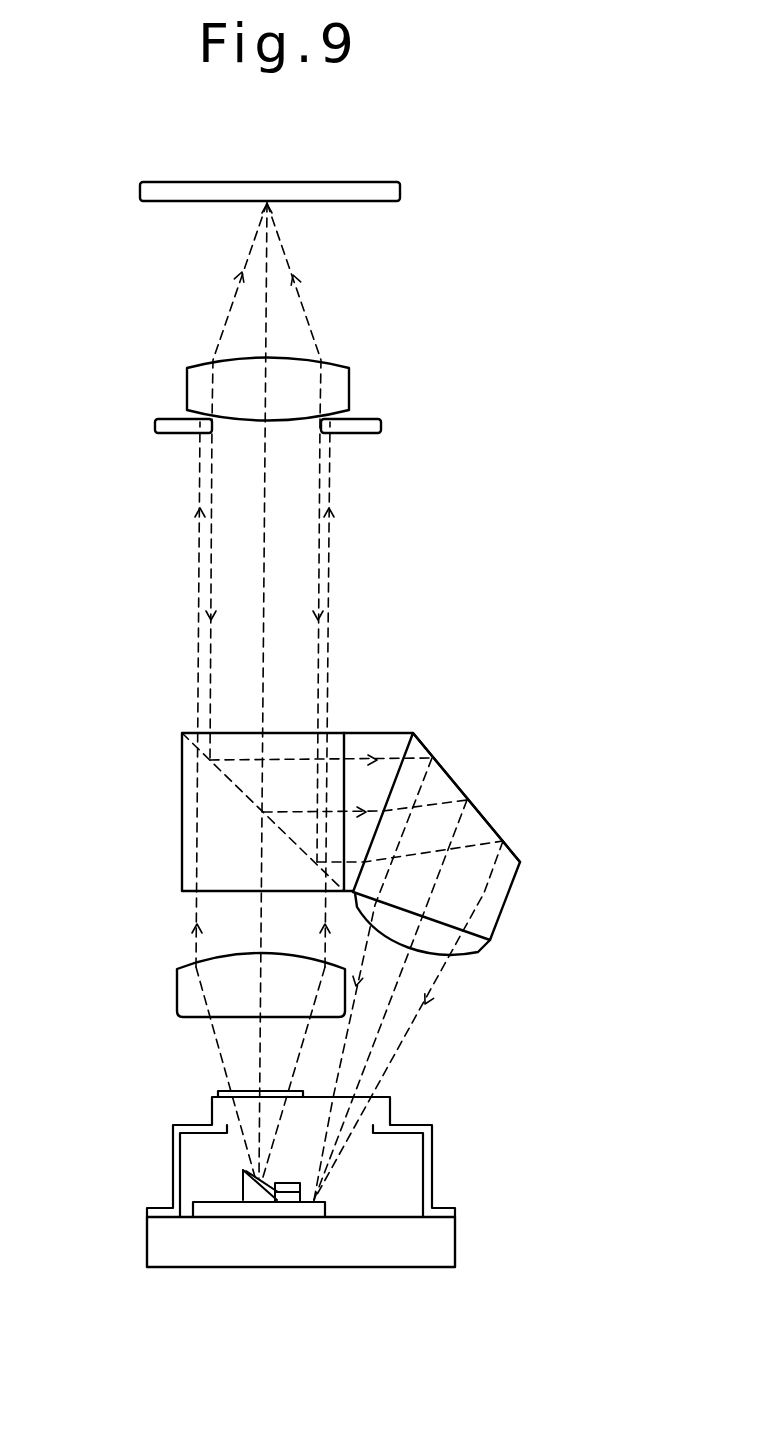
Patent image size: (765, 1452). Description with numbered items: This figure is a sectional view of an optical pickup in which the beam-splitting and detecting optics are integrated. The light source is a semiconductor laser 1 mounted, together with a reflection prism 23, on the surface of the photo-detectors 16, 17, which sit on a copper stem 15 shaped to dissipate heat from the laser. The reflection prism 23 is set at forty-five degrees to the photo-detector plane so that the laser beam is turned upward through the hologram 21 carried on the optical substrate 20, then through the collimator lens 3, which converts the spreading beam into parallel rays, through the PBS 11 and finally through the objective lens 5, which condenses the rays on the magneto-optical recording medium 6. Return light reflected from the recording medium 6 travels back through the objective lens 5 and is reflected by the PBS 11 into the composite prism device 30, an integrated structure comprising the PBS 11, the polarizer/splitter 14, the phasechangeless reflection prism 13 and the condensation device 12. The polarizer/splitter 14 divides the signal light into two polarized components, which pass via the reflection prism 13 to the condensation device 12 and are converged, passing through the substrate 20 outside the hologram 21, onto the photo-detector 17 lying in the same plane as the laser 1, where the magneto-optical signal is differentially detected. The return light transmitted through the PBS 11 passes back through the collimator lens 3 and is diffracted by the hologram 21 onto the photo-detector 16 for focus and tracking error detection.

The semiconductor laser 1 is at (284, 1203).
The collimator lens 3 is at (178, 968).
The objective lens 5 is at (188, 378).
The magneto-optical recording medium 6 is at (141, 188).
The PBS 11 is at (182, 823).
The condensation device 12 is at (478, 950).
The reflection prism 13 is at (457, 777).
The polarizer/splitter 14 is at (372, 733).
The stem 15 is at (418, 1269).
The photo-detector 16 is at (207, 1202).
The photo-detector 17 is at (311, 1199).
The optical substrate 20 is at (392, 1107).
The hologram 21 is at (219, 1092).
The reflection prism 23 is at (242, 1184).
The composite prism device 30 is at (366, 839).